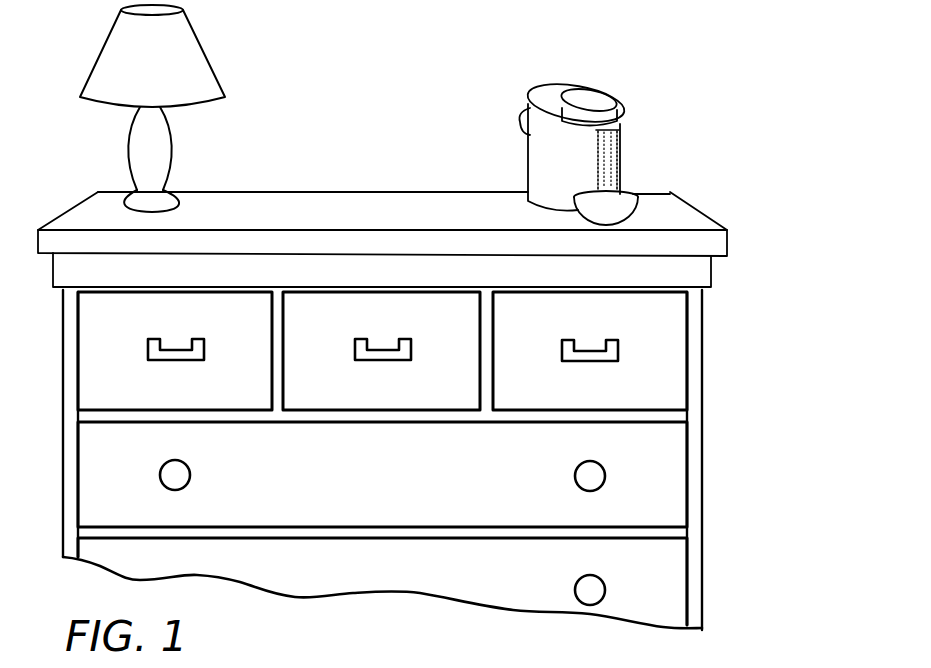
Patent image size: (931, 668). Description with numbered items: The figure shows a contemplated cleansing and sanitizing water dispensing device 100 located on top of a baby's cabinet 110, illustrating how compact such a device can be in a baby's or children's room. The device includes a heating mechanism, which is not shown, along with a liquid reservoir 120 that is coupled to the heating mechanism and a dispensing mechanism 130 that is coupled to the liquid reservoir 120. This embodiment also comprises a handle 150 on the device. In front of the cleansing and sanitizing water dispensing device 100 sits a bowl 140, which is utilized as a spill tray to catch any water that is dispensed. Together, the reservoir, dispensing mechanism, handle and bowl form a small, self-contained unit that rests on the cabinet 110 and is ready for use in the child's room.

The cleansing and sanitizing water dispensing device 100 is at (688, 62).
The baby's cabinet 110 is at (722, 372).
The liquid reservoir 120 is at (612, 160).
The dispensing mechanism 130 is at (600, 132).
The bowl 140 is at (640, 217).
The handle 150 is at (525, 127).